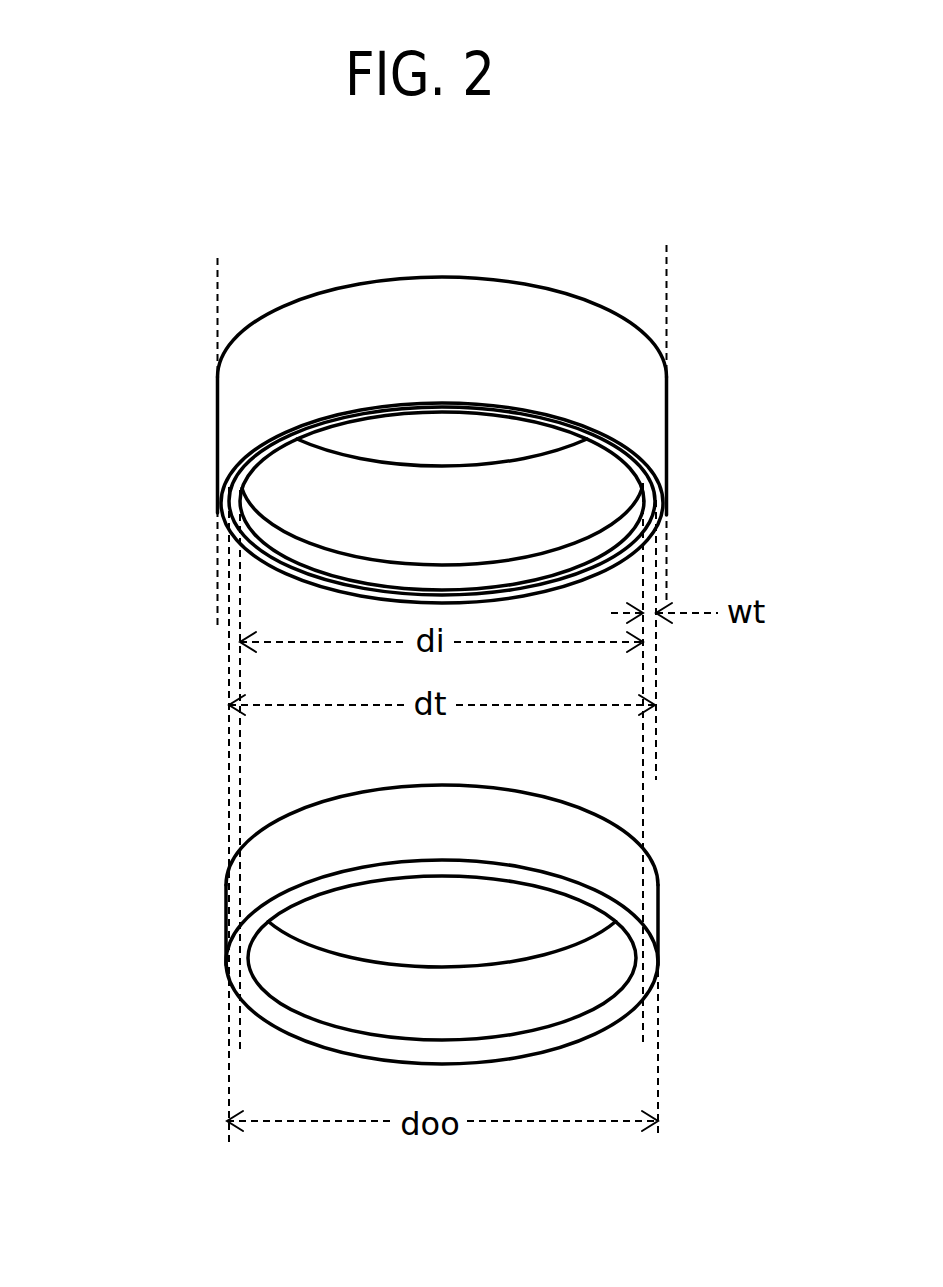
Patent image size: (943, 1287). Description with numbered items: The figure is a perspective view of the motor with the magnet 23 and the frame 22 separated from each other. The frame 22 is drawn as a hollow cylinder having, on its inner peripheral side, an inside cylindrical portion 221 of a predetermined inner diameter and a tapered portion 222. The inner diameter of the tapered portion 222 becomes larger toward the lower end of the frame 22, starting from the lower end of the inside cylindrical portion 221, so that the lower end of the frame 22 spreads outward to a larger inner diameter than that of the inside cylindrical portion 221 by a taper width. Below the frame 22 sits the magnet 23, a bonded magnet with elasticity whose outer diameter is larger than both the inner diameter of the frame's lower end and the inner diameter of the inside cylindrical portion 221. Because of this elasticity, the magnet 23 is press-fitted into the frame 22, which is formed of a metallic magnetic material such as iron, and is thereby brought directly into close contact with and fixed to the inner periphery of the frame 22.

The frame 22 is at (630, 393).
The inside cylindrical portion 221 is at (337, 515).
The tapered portion 222 is at (347, 572).
The magnet 23 is at (612, 860).